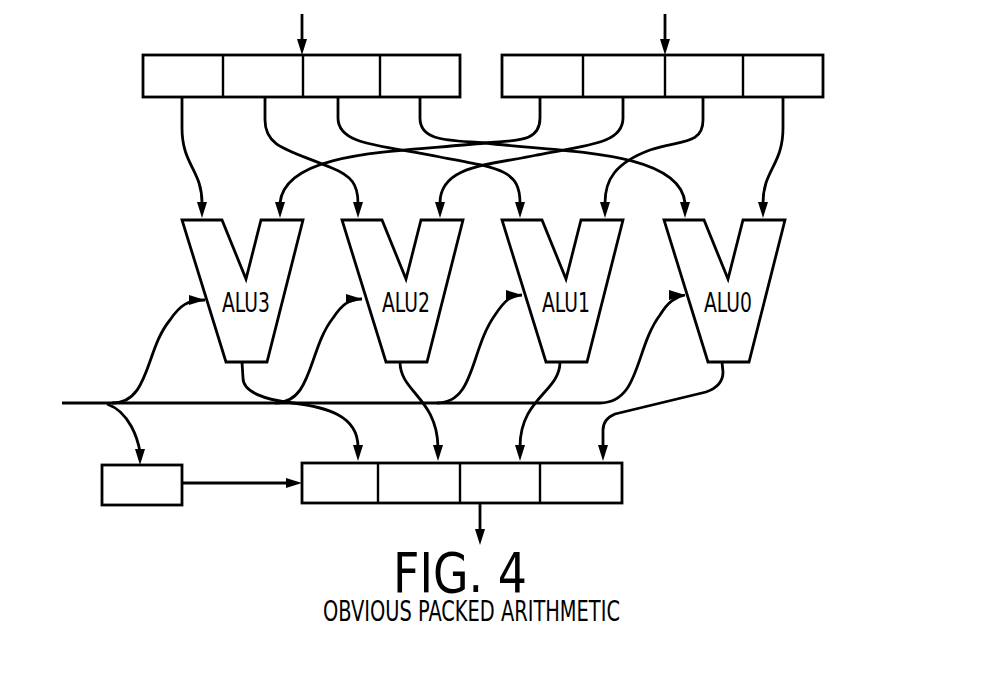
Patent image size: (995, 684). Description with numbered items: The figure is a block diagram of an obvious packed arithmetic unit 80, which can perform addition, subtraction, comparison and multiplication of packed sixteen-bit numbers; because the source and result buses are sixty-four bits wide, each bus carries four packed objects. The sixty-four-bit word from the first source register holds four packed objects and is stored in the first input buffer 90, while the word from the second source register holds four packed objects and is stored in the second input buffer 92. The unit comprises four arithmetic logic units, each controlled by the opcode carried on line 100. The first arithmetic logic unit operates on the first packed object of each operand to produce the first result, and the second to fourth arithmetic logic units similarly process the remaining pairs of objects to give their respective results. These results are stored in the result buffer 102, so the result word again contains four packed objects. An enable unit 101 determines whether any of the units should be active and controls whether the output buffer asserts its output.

The second input buffer 92 is at (423, 55).
The first input buffer 90 is at (783, 55).
The opcode line 100 is at (98, 405).
The enable unit 101 is at (170, 505).
The result buffer 102 is at (622, 487).
The obvious packed arithmetic unit 80 is at (726, 406).